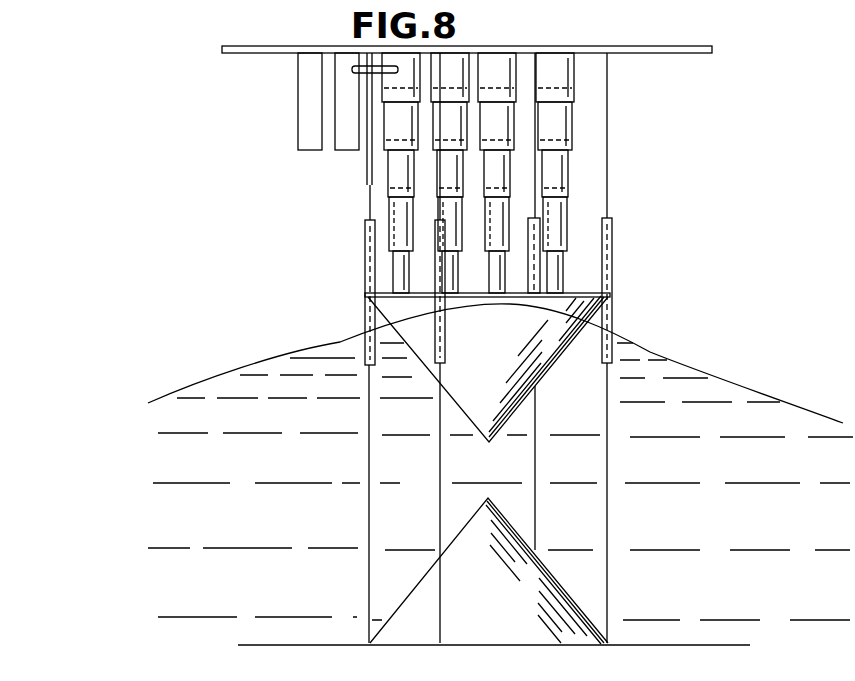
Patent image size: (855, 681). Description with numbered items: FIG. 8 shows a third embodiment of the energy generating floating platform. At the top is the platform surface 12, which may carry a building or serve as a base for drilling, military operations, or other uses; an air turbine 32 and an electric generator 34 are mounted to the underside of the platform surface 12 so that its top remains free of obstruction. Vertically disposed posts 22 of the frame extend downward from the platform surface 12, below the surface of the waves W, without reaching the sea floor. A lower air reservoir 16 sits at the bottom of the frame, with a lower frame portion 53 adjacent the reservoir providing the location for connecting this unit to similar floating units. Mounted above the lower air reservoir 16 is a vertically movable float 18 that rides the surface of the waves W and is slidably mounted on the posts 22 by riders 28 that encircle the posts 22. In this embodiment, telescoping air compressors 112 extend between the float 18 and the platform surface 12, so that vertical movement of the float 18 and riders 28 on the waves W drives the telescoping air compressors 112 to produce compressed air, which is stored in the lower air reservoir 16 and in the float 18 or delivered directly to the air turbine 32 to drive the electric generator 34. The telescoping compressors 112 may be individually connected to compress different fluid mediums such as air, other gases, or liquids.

The platform surface 12 is at (683, 45).
The electric generator 34 is at (315, 152).
The air turbine 32 is at (345, 152).
The telescoping air compressors 112 is at (548, 243).
The riders 28 is at (365, 282).
The float 18 is at (541, 380).
The posts 22 is at (613, 491).
The lower air reservoir 16 is at (543, 587).
The lower frame portion 53 is at (660, 644).
The waves W is at (806, 405).